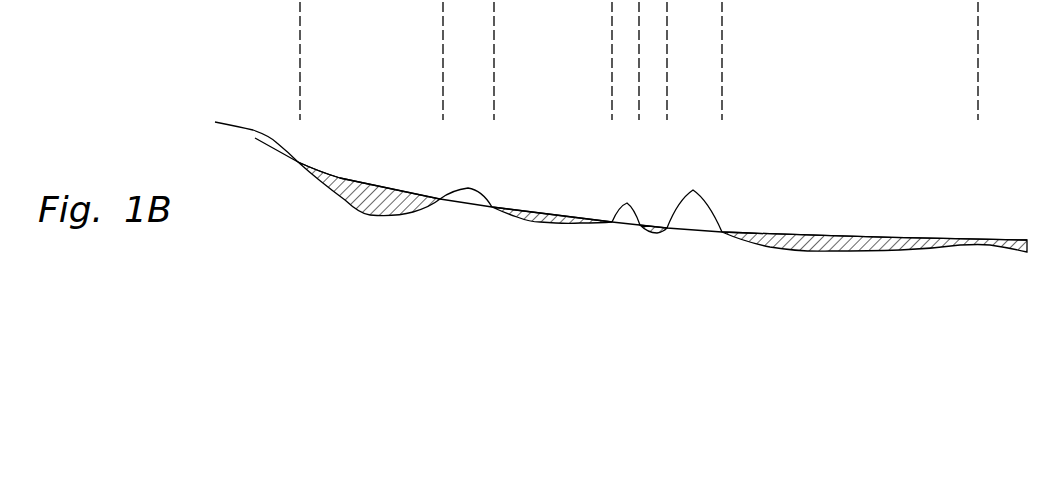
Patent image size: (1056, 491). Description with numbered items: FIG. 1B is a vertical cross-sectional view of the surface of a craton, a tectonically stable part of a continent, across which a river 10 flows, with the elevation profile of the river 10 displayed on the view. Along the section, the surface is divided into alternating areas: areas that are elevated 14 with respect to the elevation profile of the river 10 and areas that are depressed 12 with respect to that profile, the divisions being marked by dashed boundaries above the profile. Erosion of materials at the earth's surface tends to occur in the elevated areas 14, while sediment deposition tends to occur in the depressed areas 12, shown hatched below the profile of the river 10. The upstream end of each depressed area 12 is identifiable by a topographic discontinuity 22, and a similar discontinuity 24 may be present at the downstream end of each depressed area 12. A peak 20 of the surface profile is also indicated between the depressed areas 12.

The river 10 is at (621, 187).
The depressed areas 12 is at (610, 49).
The elevated areas 14 is at (468, 49).
The peak / hump above reference line 20 is at (467, 187).
The upstream topographic discontinuity 22 is at (302, 160).
The downstream topographic discontinuity 24 is at (440, 196).